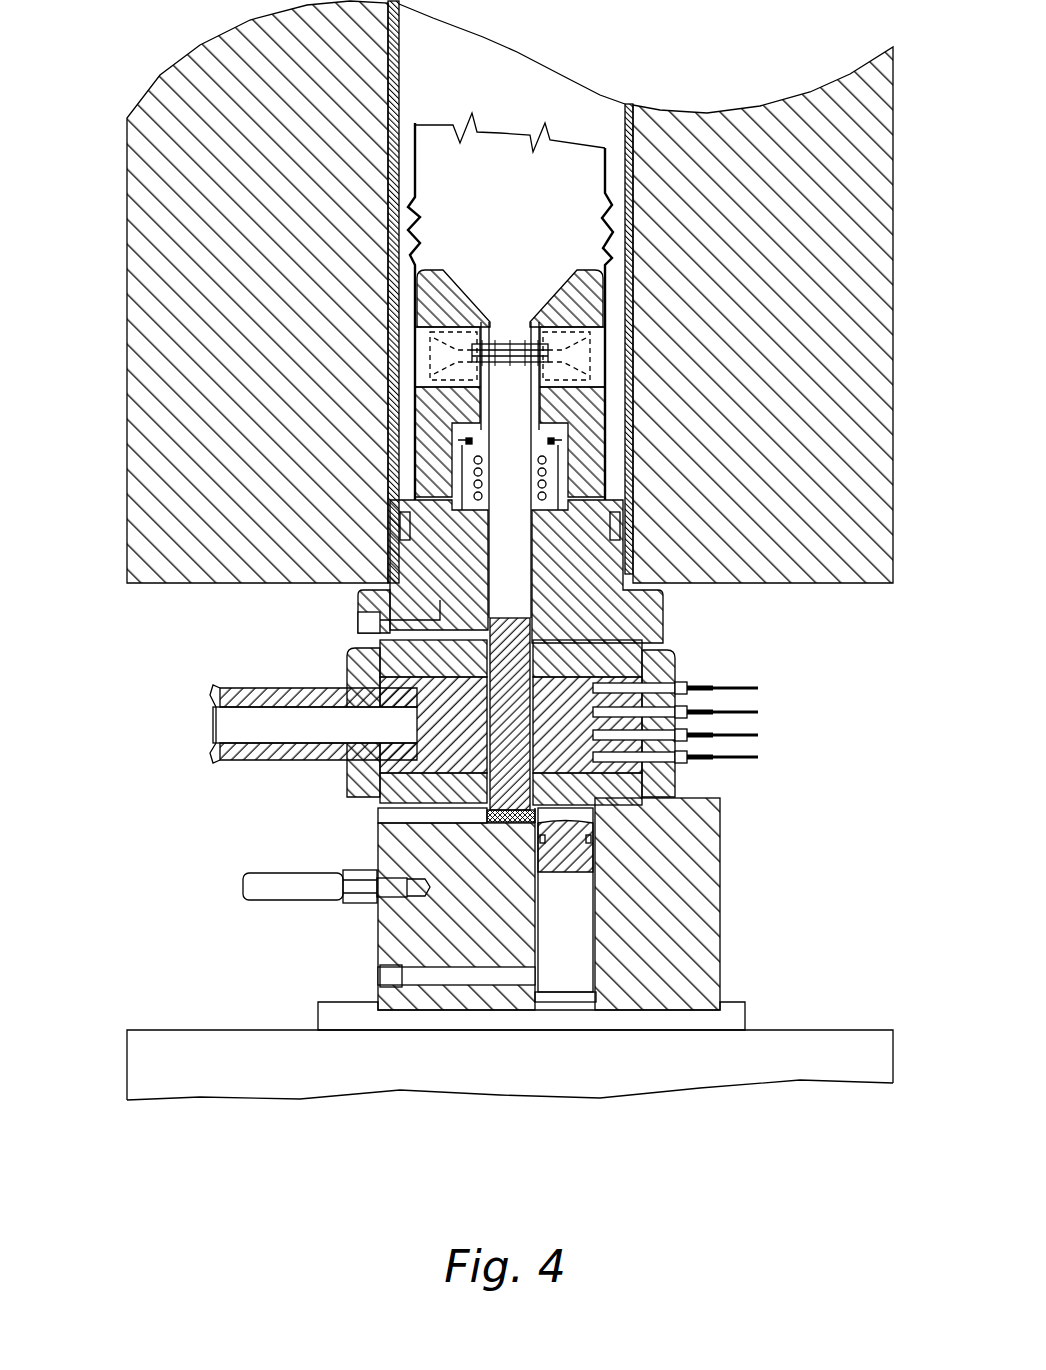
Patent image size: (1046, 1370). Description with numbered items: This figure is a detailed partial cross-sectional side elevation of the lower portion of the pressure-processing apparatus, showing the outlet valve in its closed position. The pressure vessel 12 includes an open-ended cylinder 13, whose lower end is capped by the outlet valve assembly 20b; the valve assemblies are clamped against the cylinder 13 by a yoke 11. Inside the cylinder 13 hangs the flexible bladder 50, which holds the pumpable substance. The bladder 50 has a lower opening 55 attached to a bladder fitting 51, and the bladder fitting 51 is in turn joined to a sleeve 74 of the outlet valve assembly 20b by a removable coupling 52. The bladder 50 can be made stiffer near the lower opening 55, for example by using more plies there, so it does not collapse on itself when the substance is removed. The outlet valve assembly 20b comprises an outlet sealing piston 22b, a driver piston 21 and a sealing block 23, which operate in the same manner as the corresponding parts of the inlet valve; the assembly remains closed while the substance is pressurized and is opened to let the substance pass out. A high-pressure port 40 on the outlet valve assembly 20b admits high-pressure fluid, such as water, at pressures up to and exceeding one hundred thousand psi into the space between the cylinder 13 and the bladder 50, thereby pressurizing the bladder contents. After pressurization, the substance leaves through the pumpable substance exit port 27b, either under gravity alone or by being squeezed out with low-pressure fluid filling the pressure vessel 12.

The yoke 11 is at (274, 1081).
The pressure vessel 12 is at (85, 210).
The open-ended cylinder 13 is at (142, 292).
The outlet valve assembly 20b is at (725, 663).
The driver piston 21 is at (680, 815).
The outlet sealing piston 22b is at (610, 640).
The sealing block 23 is at (712, 920).
The pumpable substance exit port 27b is at (288, 752).
The high-pressure port 40 is at (360, 635).
The flexible bladder 50 is at (595, 170).
The bladder fitting 51 is at (590, 300).
The removable coupling 52 is at (432, 360).
The lower opening 55 is at (426, 248).
The sleeve 74 is at (535, 412).